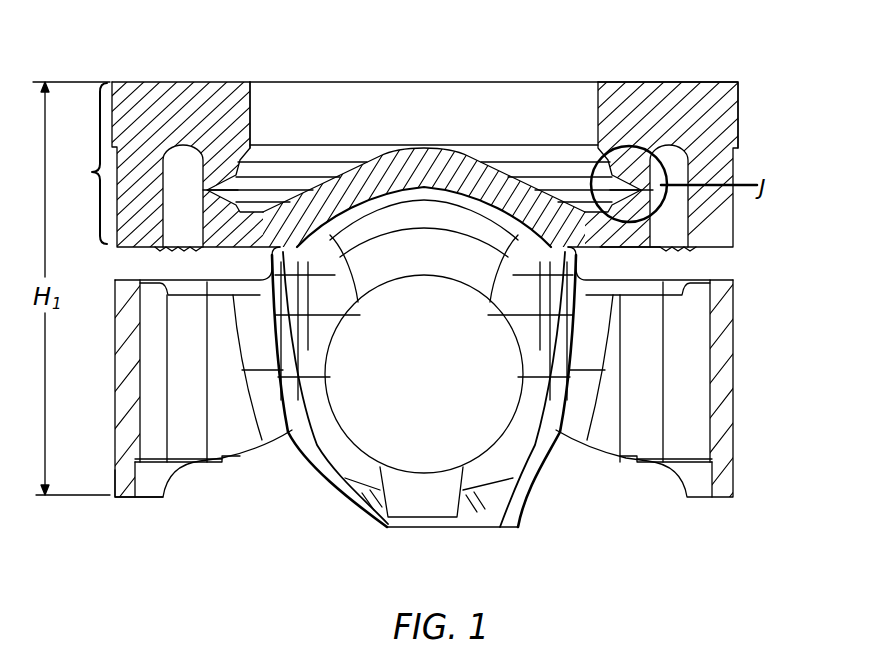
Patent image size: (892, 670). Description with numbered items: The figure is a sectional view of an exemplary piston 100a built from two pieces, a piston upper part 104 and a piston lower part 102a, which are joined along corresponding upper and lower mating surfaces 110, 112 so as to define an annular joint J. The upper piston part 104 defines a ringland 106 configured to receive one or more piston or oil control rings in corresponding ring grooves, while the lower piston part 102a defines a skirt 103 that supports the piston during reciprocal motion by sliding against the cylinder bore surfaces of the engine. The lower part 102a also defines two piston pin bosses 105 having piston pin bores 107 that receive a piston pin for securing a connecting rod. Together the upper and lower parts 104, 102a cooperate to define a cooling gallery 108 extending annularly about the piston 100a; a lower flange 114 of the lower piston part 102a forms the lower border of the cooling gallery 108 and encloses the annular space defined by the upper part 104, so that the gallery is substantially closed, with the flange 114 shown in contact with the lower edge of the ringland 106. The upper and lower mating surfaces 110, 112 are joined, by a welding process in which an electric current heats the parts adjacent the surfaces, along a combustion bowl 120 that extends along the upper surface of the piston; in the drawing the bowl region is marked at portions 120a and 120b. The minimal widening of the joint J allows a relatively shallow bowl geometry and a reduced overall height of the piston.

The piston 100a is at (104, 70).
The piston lower part 102a is at (123, 485).
The skirt 103 is at (738, 400).
The piston upper part 104 is at (703, 103).
The piston pin bosses 105 is at (410, 507).
The ringland 106 is at (81, 163).
The piston pin bores 107 is at (423, 470).
The cooling gallery 108 is at (180, 178).
The upper mating surface 110 is at (632, 187).
The lower mating surface 112 is at (653, 229).
The lower flange 114 is at (173, 250).
The combustion bowl 120 is at (425, 110).
The bowl wall 120a is at (287, 128).
The bowl center rib 120b is at (468, 182).